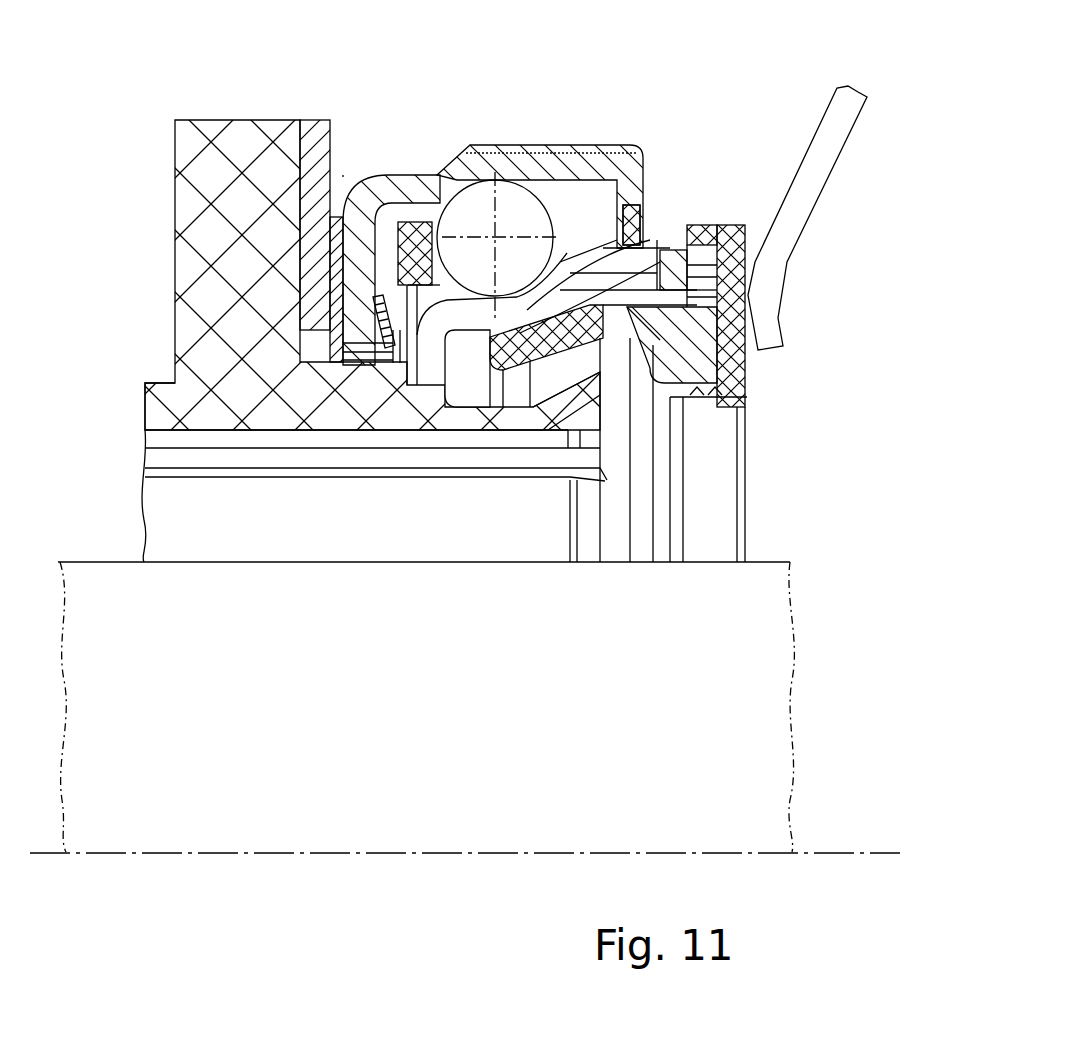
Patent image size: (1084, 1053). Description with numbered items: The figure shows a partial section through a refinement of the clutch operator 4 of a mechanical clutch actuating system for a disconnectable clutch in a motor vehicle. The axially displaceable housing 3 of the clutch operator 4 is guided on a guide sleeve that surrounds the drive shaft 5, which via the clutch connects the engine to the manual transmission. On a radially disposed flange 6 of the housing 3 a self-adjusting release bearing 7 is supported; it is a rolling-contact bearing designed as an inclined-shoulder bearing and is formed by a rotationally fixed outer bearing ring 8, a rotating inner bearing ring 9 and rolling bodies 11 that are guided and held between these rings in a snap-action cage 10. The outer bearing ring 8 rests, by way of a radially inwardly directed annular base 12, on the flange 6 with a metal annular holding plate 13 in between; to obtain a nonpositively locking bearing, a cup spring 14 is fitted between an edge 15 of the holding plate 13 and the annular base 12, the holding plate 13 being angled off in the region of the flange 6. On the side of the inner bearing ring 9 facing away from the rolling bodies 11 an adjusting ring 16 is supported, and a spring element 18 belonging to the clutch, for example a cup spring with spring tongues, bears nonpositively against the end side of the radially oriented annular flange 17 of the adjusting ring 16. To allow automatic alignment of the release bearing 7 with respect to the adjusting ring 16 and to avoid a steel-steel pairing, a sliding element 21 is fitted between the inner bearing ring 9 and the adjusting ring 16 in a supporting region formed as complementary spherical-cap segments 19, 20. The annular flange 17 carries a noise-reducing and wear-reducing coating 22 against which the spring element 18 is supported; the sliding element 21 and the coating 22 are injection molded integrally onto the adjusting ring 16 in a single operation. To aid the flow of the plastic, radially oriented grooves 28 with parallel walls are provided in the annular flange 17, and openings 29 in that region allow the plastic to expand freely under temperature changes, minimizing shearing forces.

The housing 3 is at (158, 404).
The clutch operator 4 is at (380, 110).
The drive shaft 5 is at (162, 812).
The flange 6 is at (190, 213).
The release bearing 7 is at (553, 193).
The outer bearing ring 8 is at (455, 176).
The inner bearing ring 9 is at (474, 312).
The snap-action cage 10 is at (410, 232).
The rolling bodies 11 is at (498, 187).
The annular base 12 is at (355, 320).
The metal annular holding plate 13 is at (337, 227).
The cup spring 14 is at (375, 305).
The edge 15 is at (395, 340).
The adjusting ring 16 is at (678, 367).
The annular flange 17 is at (700, 340).
The spring element 18 is at (828, 118).
The spherical-cap segment 19 is at (525, 300).
The spherical-cap segment 20 is at (623, 312).
The sliding element 21 is at (522, 332).
The coating 22 is at (730, 340).
The grooves 28 is at (708, 283).
The openings 29 is at (700, 303).